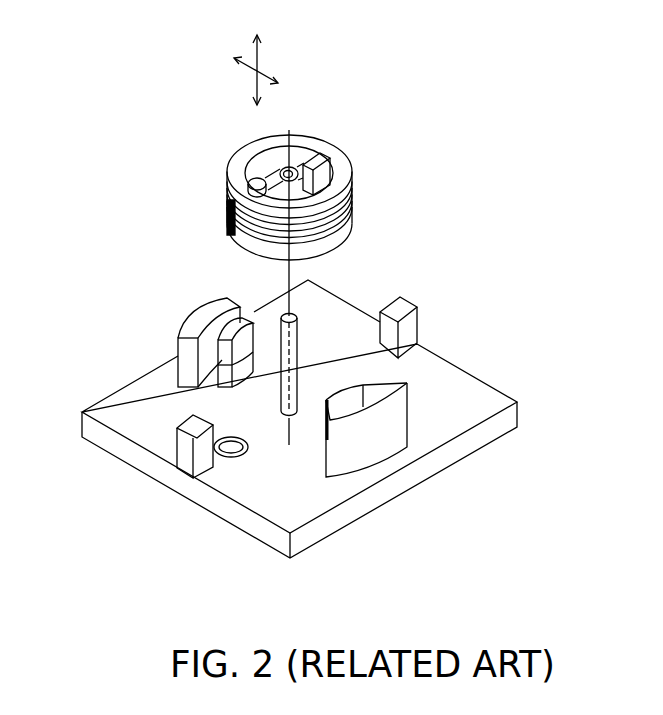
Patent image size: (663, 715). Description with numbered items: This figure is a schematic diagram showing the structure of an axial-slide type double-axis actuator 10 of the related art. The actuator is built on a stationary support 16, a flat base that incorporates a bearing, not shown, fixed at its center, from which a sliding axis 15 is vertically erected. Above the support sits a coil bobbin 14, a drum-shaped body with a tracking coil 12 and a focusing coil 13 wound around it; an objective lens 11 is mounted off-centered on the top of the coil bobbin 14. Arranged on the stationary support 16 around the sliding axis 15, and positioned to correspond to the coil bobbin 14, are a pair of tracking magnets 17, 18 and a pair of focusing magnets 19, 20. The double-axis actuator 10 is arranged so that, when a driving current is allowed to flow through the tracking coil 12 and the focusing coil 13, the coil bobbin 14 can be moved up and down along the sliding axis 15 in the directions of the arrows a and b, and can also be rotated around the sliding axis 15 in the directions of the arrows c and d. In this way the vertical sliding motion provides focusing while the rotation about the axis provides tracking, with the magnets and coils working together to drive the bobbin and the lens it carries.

The axial-slide type double-axis actuator 10 is at (69, 142).
The objective lens 11 is at (252, 182).
The tracking coil 12 is at (230, 214).
The focusing coil 13 is at (333, 240).
The coil bobbin 14 is at (280, 192).
The sliding axis 15 is at (298, 330).
The stationary support 16 is at (452, 455).
The tracking magnet 17 is at (400, 345).
The tracking magnet 18 is at (208, 462).
The focusing magnet 19 is at (227, 385).
The focusing magnet 20 is at (350, 393).